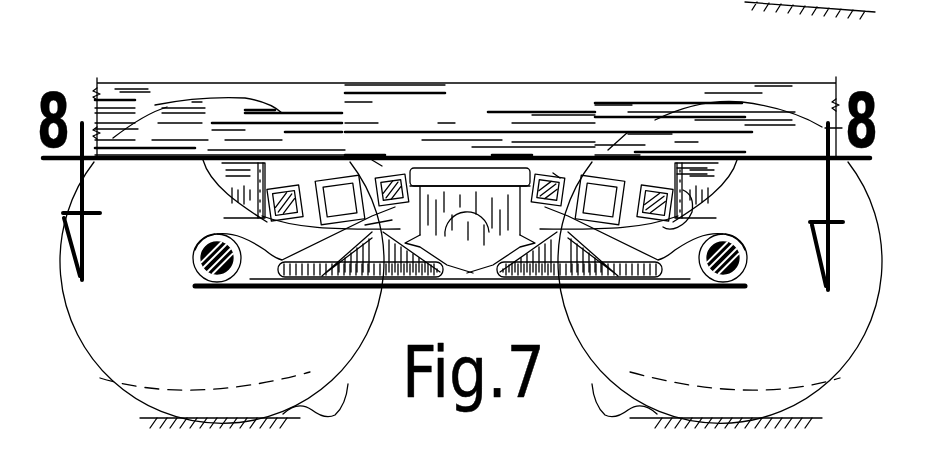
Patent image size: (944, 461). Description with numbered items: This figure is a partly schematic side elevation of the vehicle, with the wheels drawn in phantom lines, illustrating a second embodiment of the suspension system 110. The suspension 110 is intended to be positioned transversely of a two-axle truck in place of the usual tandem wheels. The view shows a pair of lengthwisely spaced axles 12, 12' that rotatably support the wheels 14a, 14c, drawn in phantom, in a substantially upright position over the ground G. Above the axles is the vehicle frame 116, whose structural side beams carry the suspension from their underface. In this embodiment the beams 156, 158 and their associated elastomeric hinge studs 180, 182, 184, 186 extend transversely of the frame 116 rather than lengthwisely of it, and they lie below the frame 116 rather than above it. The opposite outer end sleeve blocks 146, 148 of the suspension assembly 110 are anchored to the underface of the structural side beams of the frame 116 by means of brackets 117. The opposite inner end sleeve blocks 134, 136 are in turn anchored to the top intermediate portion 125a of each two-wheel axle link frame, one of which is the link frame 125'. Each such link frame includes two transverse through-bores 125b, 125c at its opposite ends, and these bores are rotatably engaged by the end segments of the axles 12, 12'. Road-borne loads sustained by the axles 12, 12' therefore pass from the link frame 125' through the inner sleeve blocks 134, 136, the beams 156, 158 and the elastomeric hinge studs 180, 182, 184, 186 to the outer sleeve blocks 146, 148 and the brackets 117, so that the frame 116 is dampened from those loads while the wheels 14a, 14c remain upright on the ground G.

The vehicle frame 116 is at (175, 75).
The bracket 117 is at (203, 158).
The elastomeric hinge stud 180 is at (286, 188).
The outer end sleeve block 146 is at (318, 170).
The beam 156 is at (371, 170).
The suspension system 110 is at (381, 150).
The inner end sleeve block 134 is at (400, 176).
The inner end sleeve block 136 is at (541, 176).
The beam 158 is at (600, 176).
The elastomeric hinge stud 186 is at (641, 186).
The outer end sleeve block 148 is at (668, 165).
The transverse through-bore 125b is at (193, 262).
The axle 12 is at (204, 293).
The two-wheel axle link frame 125' is at (470, 279).
The elastomeric hinge stud 182 is at (290, 285).
The top intermediate portion 125a is at (475, 255).
The elastomeric hinge stud 184 is at (622, 270).
The axle 12' is at (723, 293).
The transverse through-bore 125c is at (749, 264).
The wheel 14a is at (222, 292).
The wheel 14c is at (720, 292).
The ground G is at (481, 395).